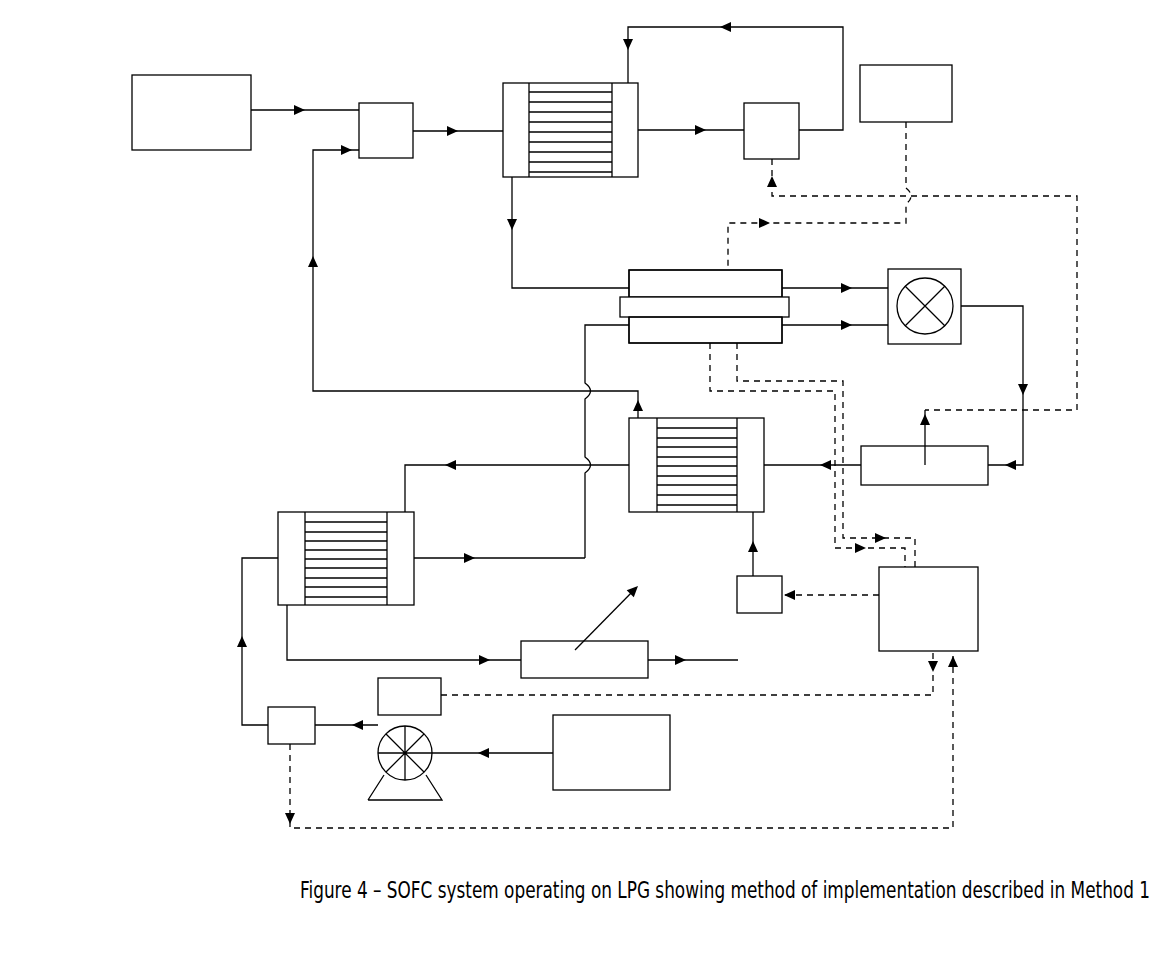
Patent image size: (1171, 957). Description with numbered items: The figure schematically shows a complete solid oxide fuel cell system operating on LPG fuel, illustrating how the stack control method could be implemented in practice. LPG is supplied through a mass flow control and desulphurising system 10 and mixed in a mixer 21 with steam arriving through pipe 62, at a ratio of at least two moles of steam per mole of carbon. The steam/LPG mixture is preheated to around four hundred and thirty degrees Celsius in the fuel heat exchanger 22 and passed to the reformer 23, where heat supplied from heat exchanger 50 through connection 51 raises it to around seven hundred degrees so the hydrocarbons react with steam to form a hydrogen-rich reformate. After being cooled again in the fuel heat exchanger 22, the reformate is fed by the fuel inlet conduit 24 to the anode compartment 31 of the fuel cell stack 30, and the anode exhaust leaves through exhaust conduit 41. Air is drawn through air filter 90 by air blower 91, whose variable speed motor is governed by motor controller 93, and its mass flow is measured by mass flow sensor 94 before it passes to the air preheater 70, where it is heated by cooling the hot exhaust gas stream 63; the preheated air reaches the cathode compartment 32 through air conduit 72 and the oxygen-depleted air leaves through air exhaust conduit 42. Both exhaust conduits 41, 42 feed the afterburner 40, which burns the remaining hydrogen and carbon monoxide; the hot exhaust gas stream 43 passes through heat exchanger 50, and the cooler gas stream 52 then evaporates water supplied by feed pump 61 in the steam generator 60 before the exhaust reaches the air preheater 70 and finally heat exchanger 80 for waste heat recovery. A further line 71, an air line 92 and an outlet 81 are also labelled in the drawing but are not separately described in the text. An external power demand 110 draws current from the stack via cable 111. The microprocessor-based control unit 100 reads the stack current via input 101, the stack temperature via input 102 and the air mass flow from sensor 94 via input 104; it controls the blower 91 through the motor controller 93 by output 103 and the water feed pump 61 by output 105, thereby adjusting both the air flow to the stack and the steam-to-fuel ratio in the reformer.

The mass flow control and desulphurising system 10 is at (191, 112).
The mixer 21 is at (386, 130).
The fuel heat exchanger 22 is at (570, 146).
The reformer 23 is at (733, 90).
The fuel inlet conduit 24 is at (568, 232).
The fuel cell stack 30 is at (704, 293).
The anode compartment 31 is at (705, 285).
The cathode compartment 32 is at (705, 331).
The system afterburner 40 is at (924, 292).
The exhaust conduit 41 is at (835, 282).
The air exhaust conduit 42 is at (835, 338).
The exhaust gas stream 43 is at (994, 374).
The heat exchanger 50 is at (924, 486).
The connection 51 is at (922, 312).
The cooler gas stream 52 is at (812, 452).
The steam generator 60 is at (696, 480).
The feed pump 61 is at (759, 562).
The pipe 62 is at (475, 281).
The hot exhaust gas stream 63 is at (517, 477).
The air preheater 70 is at (346, 544).
The air outlet line 71 is at (404, 635).
The air conduit 72 is at (499, 550).
The heat exchanger 80 is at (584, 630).
The heater output 81 is at (711, 663).
The air filter 90 is at (551, 752).
The air blower 91 is at (418, 764).
The air supply line 92 is at (239, 641).
The motor controller 93 is at (423, 733).
The mass flow sensor 94 is at (291, 725).
The control unit 100 is at (928, 609).
The input 101 is at (790, 455).
The input 102 is at (826, 455).
The output 103 is at (689, 690).
The input 104 is at (621, 741).
The output 105 is at (830, 607).
The external power demand 110 is at (906, 93).
The cable 111 is at (839, 196).